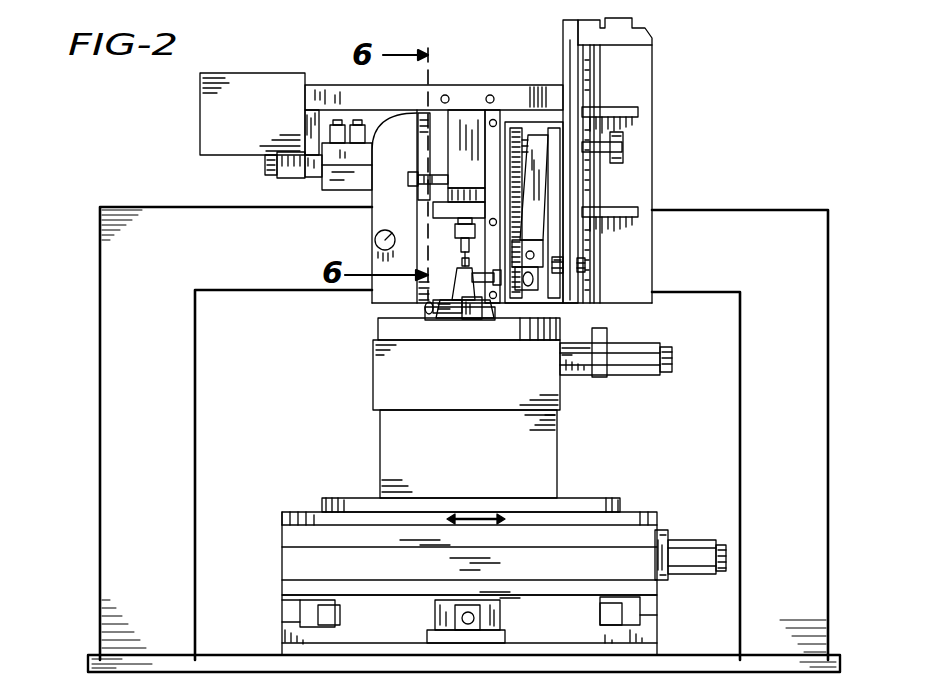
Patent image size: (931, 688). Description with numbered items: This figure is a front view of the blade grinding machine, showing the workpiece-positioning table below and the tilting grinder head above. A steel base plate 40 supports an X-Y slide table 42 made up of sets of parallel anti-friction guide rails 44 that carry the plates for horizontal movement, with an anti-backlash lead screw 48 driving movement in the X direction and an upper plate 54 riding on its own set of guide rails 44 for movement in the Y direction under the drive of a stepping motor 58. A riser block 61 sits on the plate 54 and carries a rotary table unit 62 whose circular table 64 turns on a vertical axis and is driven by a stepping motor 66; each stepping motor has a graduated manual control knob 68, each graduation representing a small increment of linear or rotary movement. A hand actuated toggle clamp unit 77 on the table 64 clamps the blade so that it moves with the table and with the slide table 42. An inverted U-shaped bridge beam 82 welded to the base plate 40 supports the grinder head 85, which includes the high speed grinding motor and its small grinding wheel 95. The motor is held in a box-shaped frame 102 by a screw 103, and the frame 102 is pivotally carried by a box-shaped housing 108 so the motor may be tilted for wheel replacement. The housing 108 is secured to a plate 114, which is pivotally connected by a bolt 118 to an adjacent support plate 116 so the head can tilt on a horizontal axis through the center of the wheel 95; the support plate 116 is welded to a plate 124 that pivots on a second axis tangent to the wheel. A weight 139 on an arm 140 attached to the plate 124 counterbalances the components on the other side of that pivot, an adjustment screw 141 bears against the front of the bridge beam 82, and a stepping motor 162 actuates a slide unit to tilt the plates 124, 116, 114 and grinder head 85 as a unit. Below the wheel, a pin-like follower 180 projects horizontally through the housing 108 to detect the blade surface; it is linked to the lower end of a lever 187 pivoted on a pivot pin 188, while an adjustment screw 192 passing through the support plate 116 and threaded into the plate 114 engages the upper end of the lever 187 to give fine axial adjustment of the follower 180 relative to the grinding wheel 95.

The steel base plate 40 is at (246, 668).
The X-Y slide table 42 is at (278, 542).
The anti-friction guide rails 44 is at (284, 612).
The anti-backlash lead screw 48 is at (474, 617).
The plate 54 is at (293, 498).
The stepping motor 58 is at (694, 538).
The riser block 61 is at (387, 434).
The rotary table unit 62 is at (368, 380).
The circular table 64 is at (377, 329).
The stepping motor 66 is at (638, 373).
The manual control knob 68 is at (726, 551).
The toggle clamp unit 77 is at (464, 320).
The bridge beam 82 is at (150, 214).
The grinder head 85 is at (438, 161).
The grinding wheel 95 is at (464, 255).
The frame 102 is at (468, 110).
The screw 103 is at (372, 210).
The housing 108 is at (530, 114).
The plate 114 is at (570, 38).
The support plate 116 is at (578, 89).
The bolt 118 is at (585, 265).
The plate 124 is at (646, 66).
The weight 139 is at (242, 92).
The arm 140 is at (328, 91).
The adjustment screw 141 is at (372, 243).
The stepping motor 162 is at (290, 181).
The follower 180 is at (488, 319).
The lever 187 is at (544, 189).
The pivot pin 188 is at (535, 255).
The adjustment screw 192 is at (626, 137).